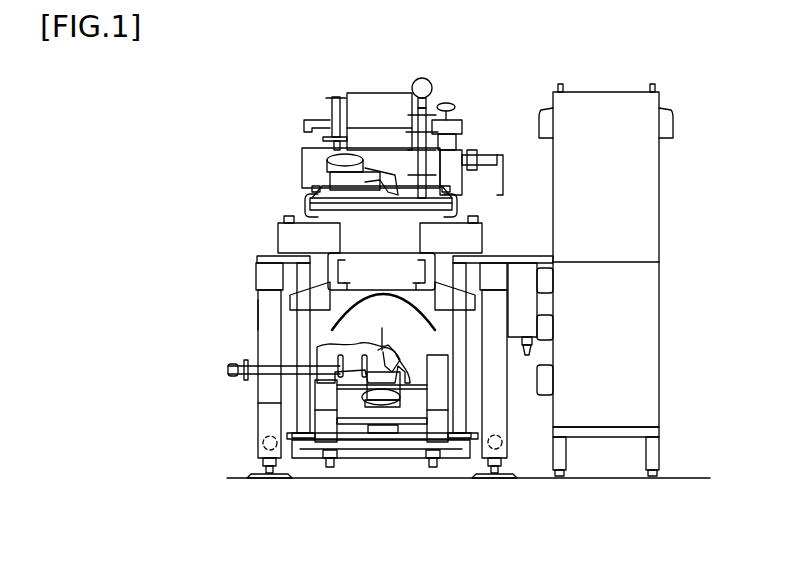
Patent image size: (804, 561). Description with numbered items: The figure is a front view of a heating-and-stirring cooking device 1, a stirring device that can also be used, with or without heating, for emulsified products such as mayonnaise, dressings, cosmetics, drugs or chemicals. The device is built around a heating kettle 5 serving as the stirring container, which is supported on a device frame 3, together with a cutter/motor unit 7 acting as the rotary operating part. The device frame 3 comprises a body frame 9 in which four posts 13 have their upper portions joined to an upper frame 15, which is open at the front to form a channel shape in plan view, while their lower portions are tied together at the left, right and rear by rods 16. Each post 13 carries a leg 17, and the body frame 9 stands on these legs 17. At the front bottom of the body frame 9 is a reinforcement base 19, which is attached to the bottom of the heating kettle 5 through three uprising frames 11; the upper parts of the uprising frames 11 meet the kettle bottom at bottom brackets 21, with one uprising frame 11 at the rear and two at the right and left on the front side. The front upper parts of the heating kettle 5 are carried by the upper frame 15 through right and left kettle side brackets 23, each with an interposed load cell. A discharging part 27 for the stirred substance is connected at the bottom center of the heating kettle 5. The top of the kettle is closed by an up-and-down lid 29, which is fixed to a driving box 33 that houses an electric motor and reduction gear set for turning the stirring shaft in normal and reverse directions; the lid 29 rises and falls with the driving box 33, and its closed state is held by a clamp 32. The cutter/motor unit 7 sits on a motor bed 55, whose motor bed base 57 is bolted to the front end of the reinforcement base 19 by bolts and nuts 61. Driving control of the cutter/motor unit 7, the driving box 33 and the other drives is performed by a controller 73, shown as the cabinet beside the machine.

The heating-and-stirring cooking device 1 is at (497, 96).
The device frame 3 is at (252, 311).
The heating kettle 5 is at (360, 226).
The cutter/motor unit 7 is at (352, 329).
The body frame 9 is at (252, 403).
The uprising frame 11 is at (293, 328).
The post 13 is at (262, 412).
The upper frame 15 is at (253, 277).
The rod 16 is at (253, 443).
The leg 17 is at (253, 470).
The reinforcement base 19 is at (315, 466).
The bottom bracket 21 is at (310, 293).
The kettle side bracket 23 is at (283, 242).
The discharging part 27 is at (390, 347).
The up-and-down lid 29 is at (333, 172).
The clamp 32 is at (307, 205).
The driving box 33 is at (366, 95).
The motor bed 55 is at (442, 397).
The motor bed base 57 is at (348, 427).
The bolts and nuts 61 is at (325, 463).
The controller 73 is at (628, 110).